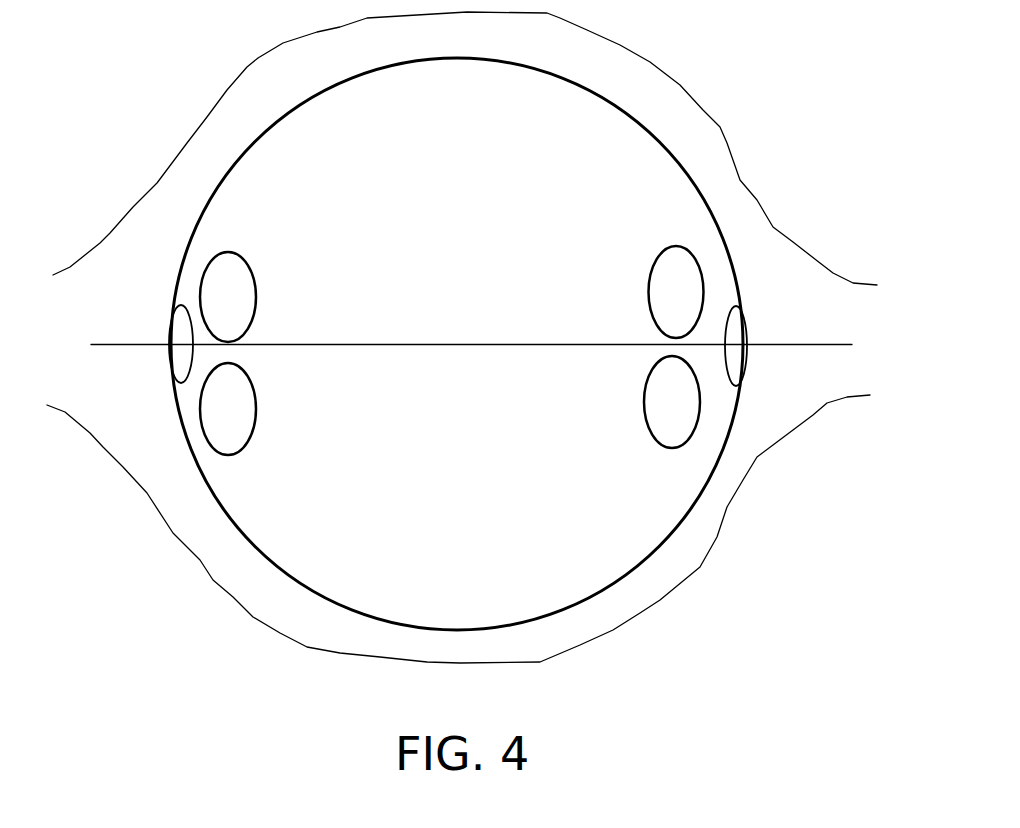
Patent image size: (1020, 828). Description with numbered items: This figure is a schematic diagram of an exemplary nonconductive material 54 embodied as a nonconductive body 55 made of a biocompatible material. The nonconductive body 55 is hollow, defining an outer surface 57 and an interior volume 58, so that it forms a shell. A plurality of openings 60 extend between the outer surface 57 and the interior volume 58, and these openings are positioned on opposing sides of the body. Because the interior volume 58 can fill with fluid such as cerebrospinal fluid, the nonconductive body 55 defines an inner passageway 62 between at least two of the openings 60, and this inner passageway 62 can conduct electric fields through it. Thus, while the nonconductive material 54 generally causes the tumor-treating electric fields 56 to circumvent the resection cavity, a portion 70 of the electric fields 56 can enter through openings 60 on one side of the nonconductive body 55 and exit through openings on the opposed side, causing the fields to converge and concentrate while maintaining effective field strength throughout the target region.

The nonconductive material 54 is at (587, 222).
The nonconductive body 55 is at (530, 155).
The electric fields 56 is at (256, 60).
The outer surface 57 is at (517, 133).
The interior volume 58 is at (250, 402).
The openings 60 is at (220, 302).
The inner passageway 62 is at (174, 355).
The portion of the electric fields 70 is at (627, 346).